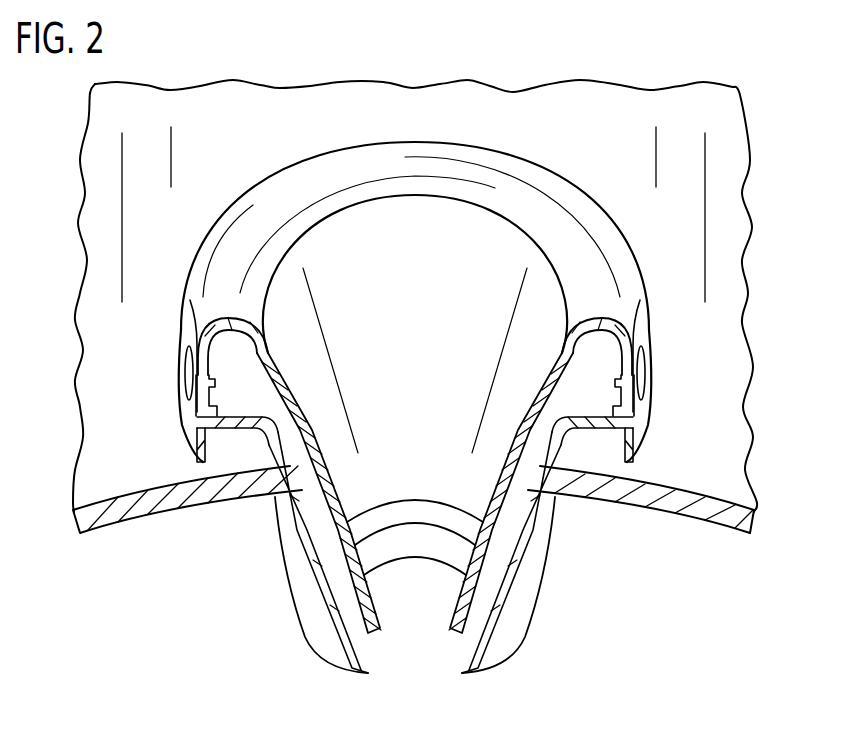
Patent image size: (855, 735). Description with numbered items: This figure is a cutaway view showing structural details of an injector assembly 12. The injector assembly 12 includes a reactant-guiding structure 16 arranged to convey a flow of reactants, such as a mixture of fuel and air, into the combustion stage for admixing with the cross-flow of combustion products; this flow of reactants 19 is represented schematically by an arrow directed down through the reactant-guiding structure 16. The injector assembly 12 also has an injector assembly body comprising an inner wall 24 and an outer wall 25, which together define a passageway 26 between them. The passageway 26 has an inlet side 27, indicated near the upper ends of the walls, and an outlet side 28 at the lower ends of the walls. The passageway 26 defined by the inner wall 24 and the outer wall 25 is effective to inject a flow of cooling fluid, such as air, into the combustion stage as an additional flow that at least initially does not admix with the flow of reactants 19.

The injector assembly 12 is at (432, 108).
The reactant-guiding structure 16 is at (382, 196).
The flow of reactants 19 is at (414, 424).
The inner wall 24 is at (330, 497).
The outer wall 25 is at (330, 587).
The passageway 26 is at (327, 530).
The inlet side 27 is at (169, 348).
The outlet side 28 is at (464, 657).